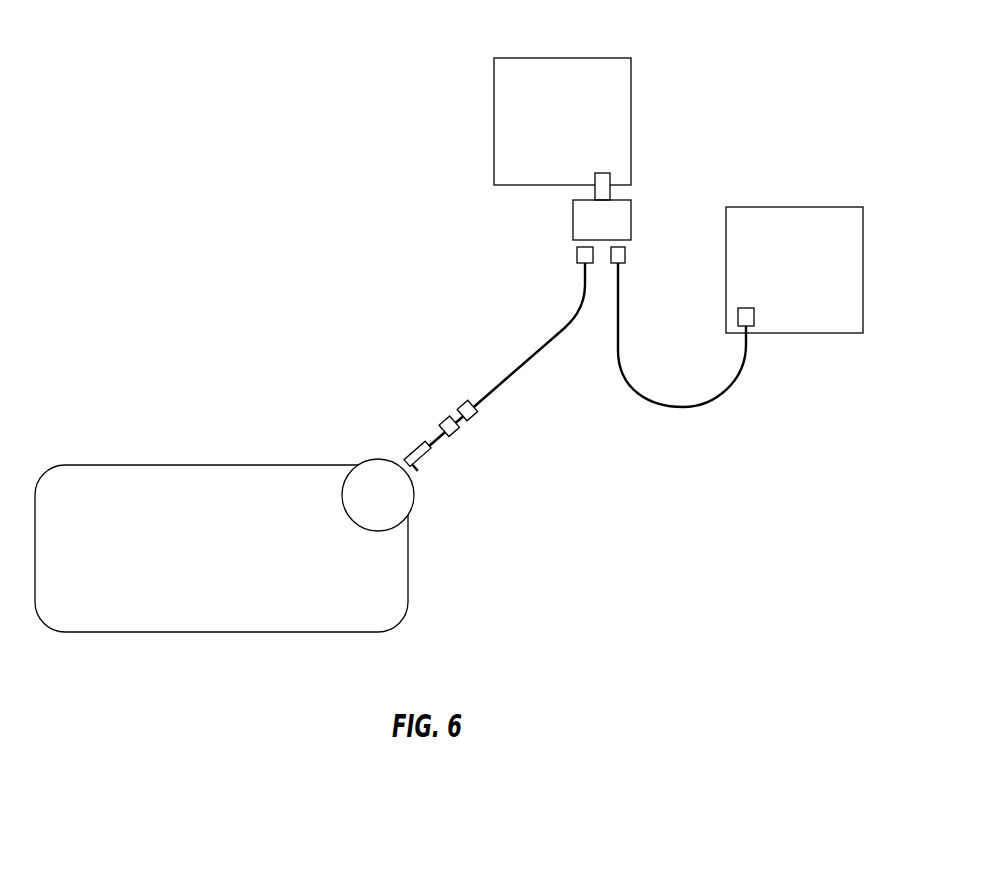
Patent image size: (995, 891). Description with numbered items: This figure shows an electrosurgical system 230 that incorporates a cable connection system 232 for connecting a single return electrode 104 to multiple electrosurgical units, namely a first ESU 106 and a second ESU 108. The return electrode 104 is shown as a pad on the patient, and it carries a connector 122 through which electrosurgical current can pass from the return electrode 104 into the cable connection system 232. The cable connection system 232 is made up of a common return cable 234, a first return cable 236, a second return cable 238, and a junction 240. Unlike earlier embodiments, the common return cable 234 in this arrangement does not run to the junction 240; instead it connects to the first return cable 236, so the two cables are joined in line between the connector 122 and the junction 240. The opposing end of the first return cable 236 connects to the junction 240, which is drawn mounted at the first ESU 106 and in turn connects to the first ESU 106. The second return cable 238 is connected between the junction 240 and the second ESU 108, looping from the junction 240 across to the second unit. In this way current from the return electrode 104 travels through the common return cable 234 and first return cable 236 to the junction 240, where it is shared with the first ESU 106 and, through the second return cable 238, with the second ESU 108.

The electrosurgical system 230 is at (336, 72).
The return electrode 104 is at (222, 633).
The first ESU 106 is at (590, 58).
The second ESU 108 is at (770, 207).
The junction 240 is at (631, 211).
The cable connection system 232 is at (403, 453).
The common return cable 234 is at (460, 439).
The first return cable 236 is at (549, 360).
The second return cable 238 is at (699, 416).
The connector 122 is at (400, 456).